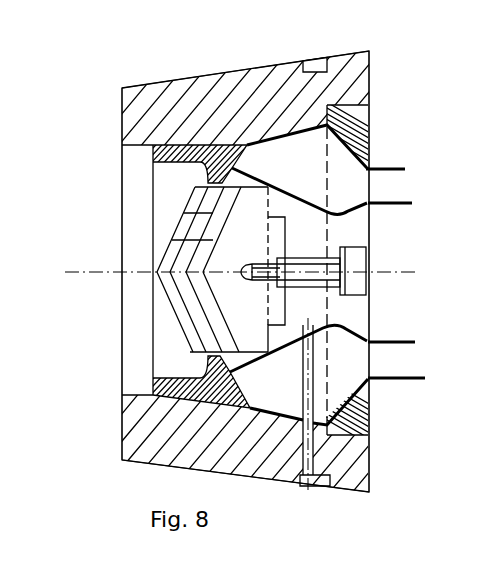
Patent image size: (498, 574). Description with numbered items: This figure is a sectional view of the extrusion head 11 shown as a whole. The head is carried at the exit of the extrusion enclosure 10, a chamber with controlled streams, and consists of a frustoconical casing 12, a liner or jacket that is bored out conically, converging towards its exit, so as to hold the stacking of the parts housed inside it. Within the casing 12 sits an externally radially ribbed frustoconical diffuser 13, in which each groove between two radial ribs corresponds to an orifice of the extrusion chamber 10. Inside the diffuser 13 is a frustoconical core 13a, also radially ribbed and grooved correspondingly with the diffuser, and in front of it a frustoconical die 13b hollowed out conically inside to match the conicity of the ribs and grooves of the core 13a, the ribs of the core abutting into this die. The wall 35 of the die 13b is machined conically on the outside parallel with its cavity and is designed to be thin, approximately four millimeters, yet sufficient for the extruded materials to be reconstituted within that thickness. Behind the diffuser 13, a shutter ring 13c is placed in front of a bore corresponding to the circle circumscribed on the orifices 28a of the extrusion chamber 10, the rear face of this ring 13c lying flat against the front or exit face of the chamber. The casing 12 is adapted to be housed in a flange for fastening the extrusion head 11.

The extrusion head 11 is at (120, 78).
The frustoconical casing 12 is at (342, 70).
The frustoconical diffuser 13 is at (342, 173).
The frustoconical core 13a is at (238, 253).
The frustoconical die 13b is at (207, 147).
The shutter ring 13c is at (362, 118).
The orifices of the extrusion chamber 28a is at (395, 273).
The wall of the die 35 is at (192, 314).
The extrusion enclosure 10 is at (354, 271).